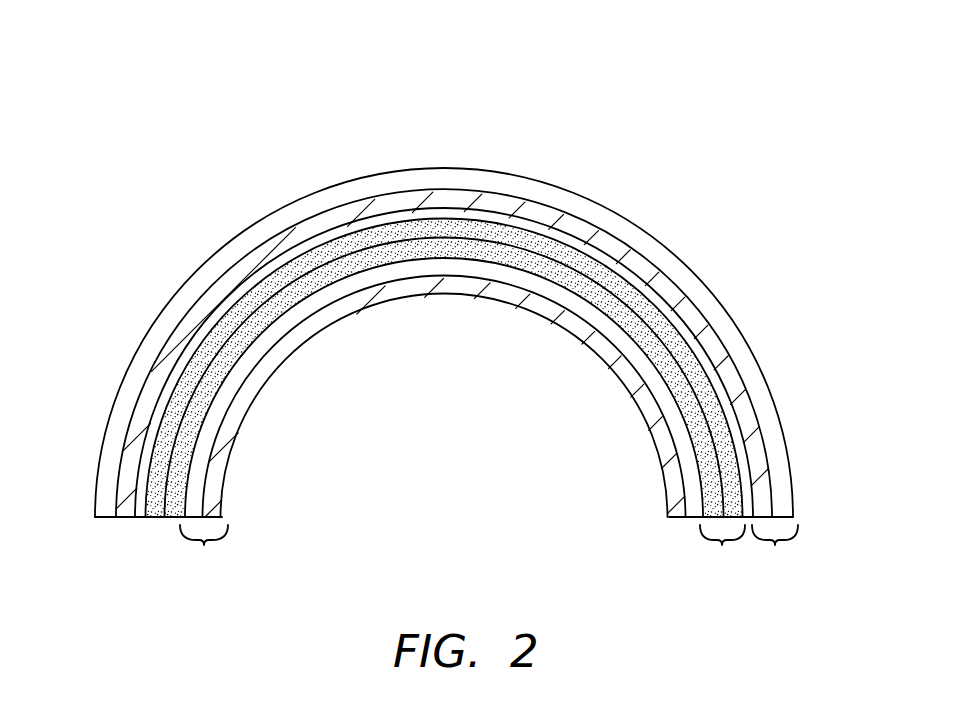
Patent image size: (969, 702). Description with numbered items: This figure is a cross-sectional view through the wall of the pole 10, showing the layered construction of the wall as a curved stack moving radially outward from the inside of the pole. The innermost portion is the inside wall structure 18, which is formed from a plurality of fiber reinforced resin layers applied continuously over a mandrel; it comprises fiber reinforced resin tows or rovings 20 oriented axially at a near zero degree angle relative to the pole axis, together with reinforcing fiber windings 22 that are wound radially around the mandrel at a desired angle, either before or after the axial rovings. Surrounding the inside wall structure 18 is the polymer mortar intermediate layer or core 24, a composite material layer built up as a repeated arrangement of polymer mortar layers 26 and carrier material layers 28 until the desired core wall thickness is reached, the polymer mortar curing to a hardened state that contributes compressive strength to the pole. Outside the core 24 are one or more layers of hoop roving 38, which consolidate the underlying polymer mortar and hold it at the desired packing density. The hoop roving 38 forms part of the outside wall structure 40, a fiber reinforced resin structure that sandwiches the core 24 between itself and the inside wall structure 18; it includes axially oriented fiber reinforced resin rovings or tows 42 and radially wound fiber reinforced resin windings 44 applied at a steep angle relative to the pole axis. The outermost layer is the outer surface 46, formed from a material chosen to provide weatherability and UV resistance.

The pole 10 is at (712, 125).
The inside wall structure 18 is at (204, 546).
The fiber reinforced resin tows or rovings 20 is at (673, 478).
The reinforcing fiber windings 22 is at (657, 390).
The polymer mortar intermediate layer or core 24 is at (722, 546).
The polymer mortar layers 26 is at (252, 313).
The carrier material layers 28 is at (185, 438).
The hoop roving 38 is at (663, 293).
The outside wall structure 40 is at (775, 546).
The fiber reinforced resin rovings or tows 42 is at (577, 227).
The fiber reinforced resin windings 44 is at (527, 190).
The outer surface 46 is at (443, 171).